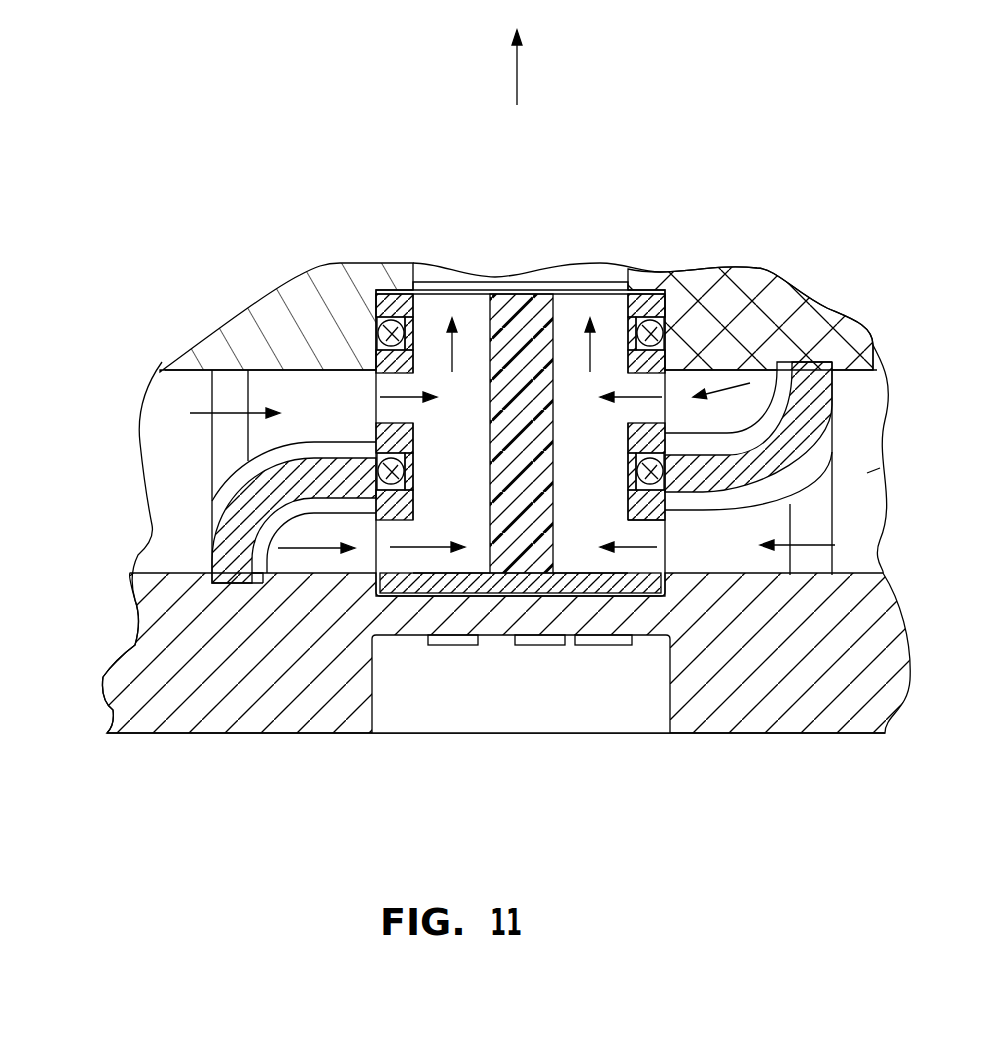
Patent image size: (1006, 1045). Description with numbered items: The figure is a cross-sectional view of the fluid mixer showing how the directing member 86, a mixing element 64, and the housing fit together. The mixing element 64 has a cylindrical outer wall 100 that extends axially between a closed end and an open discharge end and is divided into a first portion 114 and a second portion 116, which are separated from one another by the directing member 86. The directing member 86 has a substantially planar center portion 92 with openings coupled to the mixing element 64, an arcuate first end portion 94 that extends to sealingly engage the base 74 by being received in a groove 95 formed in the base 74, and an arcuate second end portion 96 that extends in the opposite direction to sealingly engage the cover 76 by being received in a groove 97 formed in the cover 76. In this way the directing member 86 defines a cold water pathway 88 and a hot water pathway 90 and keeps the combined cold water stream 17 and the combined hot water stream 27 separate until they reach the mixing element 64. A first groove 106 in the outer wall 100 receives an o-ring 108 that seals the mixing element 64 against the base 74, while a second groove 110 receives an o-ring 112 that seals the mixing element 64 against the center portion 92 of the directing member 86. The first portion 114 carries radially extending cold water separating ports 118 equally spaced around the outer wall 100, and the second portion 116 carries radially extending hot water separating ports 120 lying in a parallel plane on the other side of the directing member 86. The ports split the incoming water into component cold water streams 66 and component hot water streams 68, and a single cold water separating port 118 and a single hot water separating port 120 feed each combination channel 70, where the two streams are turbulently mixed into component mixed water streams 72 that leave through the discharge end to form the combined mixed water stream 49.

The combined cold water stream 17 is at (812, 545).
The combined hot water stream 27 is at (235, 412).
The combined mixed water stream 49 is at (519, 70).
The mixing element 64 is at (435, 283).
The component cold water streams 66 is at (458, 585).
The component hot water streams 68 is at (400, 403).
The combination channels 70 is at (572, 315).
The component mixed water streams 72 is at (376, 362).
The base 74 is at (738, 285).
The cover 76 is at (137, 733).
The directing member 86 is at (376, 370).
The cold water pathway 88 is at (867, 473).
The hot water pathway 90 is at (168, 388).
The center portion 92 is at (352, 458).
The arcuate first end portion 94 is at (868, 405).
The groove 95 is at (822, 362).
The arcuate second end portion 96 is at (210, 537).
The groove 97 is at (237, 583).
The cylindrical outer wall 100 is at (383, 300).
The first groove 106 is at (668, 305).
The o-ring 108 is at (667, 335).
The second groove 110 is at (657, 485).
The o-ring 112 is at (668, 512).
The first portion 114 is at (397, 590).
The second portion 116 is at (398, 296).
The cold water separating ports 118 is at (395, 530).
The hot water separating ports 120 is at (372, 370).